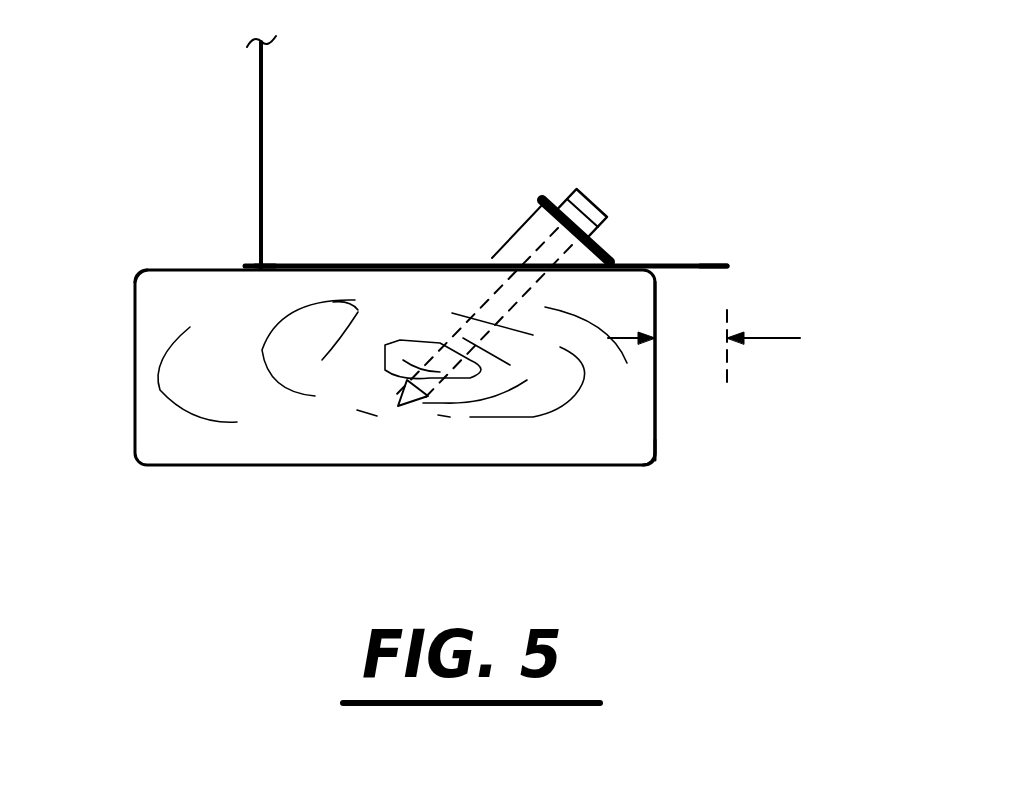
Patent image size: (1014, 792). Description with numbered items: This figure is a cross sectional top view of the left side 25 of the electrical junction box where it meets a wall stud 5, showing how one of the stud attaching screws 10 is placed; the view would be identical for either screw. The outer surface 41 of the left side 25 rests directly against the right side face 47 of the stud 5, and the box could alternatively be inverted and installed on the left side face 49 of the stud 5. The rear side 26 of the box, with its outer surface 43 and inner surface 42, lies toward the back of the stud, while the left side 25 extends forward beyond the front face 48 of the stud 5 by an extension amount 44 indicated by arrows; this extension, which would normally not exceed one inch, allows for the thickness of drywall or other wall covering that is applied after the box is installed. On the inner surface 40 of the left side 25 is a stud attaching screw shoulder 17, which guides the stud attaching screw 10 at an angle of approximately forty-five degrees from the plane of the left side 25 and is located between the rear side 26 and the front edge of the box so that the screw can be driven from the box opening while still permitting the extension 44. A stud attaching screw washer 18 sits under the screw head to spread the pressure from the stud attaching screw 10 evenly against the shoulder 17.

The stud 5 is at (660, 413).
The stud attaching screw 10 is at (600, 195).
The stud attaching screw shoulder 17 is at (498, 240).
The stud attaching screw washer 18 is at (538, 200).
The left side 25 is at (710, 240).
The rear side 26 is at (218, 147).
The inner surface 40 is at (363, 258).
The outer surface 41 is at (690, 270).
The inner surface 42 is at (266, 83).
The outer surface 43 is at (257, 212).
The extension amount 44 is at (793, 327).
The right side face 47 is at (165, 262).
The front face 48 is at (657, 440).
The left side face 49 is at (187, 466).